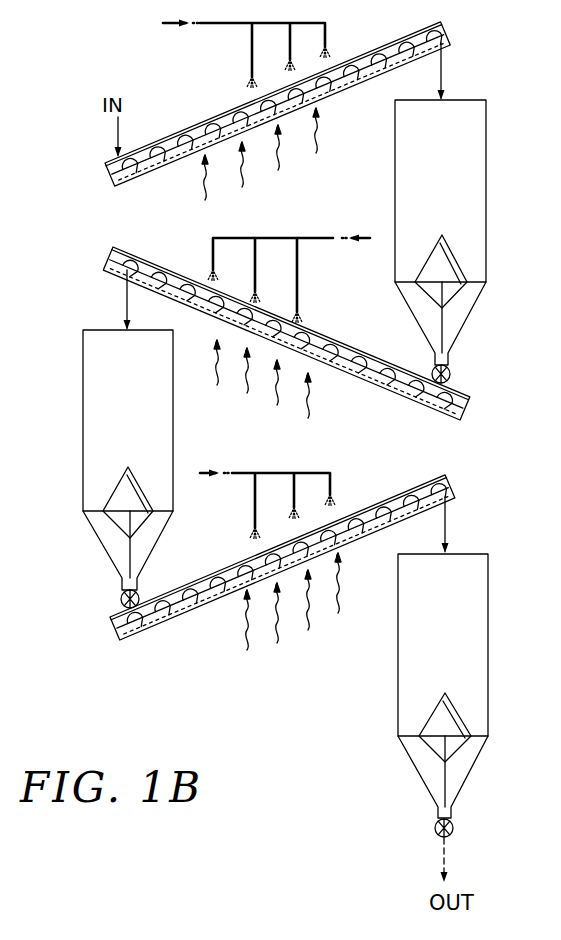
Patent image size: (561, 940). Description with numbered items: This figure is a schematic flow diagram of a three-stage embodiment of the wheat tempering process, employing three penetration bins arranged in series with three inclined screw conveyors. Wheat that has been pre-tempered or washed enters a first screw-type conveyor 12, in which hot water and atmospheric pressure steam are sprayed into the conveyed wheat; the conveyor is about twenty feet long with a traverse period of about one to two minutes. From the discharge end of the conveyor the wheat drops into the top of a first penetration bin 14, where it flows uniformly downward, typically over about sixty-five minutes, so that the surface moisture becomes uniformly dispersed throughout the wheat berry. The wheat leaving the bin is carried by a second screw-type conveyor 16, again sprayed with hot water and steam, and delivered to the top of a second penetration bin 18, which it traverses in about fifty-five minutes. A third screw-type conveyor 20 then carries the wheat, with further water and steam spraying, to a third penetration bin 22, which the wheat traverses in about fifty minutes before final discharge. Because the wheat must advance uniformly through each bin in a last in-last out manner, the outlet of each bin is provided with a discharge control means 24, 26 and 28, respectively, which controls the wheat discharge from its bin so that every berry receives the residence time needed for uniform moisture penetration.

The first screw-type conveyor 12 is at (198, 127).
The first penetration bin 14 is at (465, 241).
The wheat discharge control means 24 is at (466, 262).
The second screw-type conveyor 16 is at (356, 348).
The second penetration bin 18 is at (105, 471).
The wheat discharge control means 26 is at (107, 487).
The third screw-type conveyor 20 is at (180, 615).
The third penetration bin 22 is at (469, 695).
The wheat discharge control means 28 is at (468, 713).